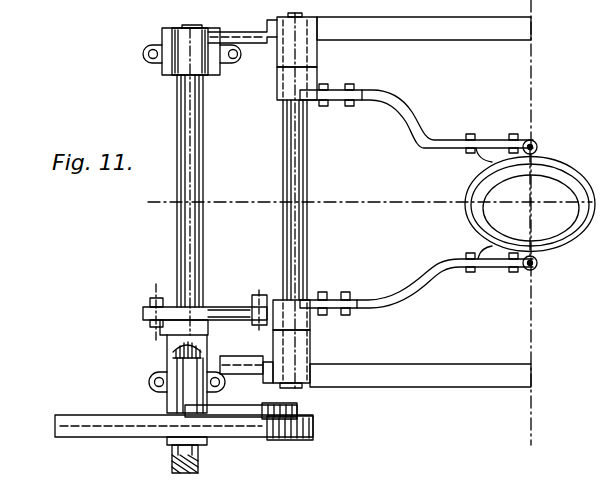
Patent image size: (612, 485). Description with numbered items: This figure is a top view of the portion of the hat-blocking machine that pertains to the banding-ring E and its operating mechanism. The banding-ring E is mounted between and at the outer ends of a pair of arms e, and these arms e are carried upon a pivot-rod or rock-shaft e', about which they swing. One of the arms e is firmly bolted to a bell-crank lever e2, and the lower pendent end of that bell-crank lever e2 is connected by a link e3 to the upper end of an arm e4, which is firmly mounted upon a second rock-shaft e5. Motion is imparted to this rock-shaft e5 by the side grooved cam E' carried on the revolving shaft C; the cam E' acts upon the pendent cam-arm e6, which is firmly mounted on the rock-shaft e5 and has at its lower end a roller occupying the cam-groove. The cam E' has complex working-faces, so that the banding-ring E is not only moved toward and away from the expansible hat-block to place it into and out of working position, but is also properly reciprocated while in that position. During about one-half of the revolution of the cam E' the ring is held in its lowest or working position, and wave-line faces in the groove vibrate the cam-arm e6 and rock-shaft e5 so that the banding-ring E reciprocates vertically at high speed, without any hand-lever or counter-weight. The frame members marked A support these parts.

The frame bar A is at (420, 203).
The revolving shaft C is at (180, 264).
The banding-ring E is at (530, 204).
The side grooved cam E' is at (184, 434).
The arms e is at (418, 199).
The pivot-rod or rock-shaft e' is at (290, 200).
The bell-crank lever e2 is at (257, 304).
The link e3 is at (229, 307).
The arm e4 is at (192, 312).
The rock-shaft e5 is at (200, 248).
The pendent cam-arm e6 is at (241, 404).